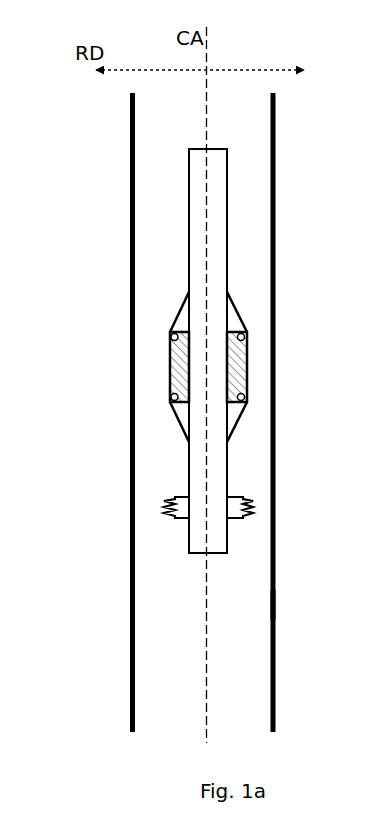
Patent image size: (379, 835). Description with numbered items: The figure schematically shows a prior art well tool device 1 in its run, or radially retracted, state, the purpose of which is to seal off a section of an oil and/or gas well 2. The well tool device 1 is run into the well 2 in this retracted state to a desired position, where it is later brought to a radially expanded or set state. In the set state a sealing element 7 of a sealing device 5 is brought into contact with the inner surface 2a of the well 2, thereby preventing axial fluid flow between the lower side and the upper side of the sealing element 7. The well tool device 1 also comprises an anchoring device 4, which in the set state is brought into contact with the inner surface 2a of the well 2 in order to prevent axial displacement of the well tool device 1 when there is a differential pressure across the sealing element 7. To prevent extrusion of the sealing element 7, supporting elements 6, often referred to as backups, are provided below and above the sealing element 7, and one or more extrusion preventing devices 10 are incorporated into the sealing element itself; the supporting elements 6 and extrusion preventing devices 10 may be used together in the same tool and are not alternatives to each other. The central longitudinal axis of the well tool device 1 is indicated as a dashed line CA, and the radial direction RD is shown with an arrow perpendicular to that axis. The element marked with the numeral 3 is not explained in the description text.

The well tool device 1 is at (150, 189).
The well 2 is at (214, 703).
The inner surface 2a is at (272, 603).
The rod 3 is at (214, 217).
The anchoring device 4 is at (146, 507).
The sealing device 5 is at (150, 366).
The supporting elements 6 is at (230, 318).
The sealing element 7 is at (238, 377).
The extrusion preventing devices 10 is at (172, 335).